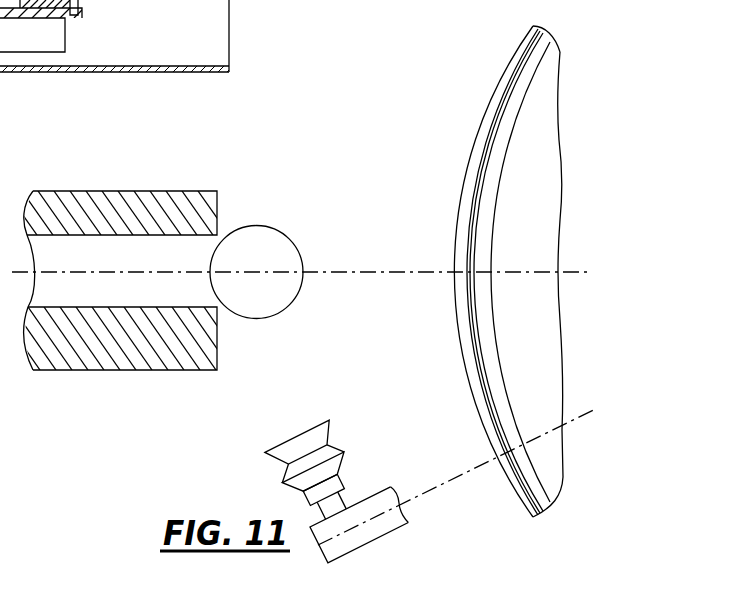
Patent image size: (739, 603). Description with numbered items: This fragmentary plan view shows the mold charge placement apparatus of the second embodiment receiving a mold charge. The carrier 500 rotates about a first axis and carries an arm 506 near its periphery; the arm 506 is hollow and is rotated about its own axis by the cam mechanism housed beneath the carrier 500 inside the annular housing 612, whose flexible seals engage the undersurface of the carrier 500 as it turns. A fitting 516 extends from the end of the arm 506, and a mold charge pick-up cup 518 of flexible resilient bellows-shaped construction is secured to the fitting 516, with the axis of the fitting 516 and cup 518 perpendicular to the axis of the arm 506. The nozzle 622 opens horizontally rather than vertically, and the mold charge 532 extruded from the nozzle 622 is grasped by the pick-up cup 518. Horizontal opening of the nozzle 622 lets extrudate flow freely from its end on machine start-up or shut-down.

The carrier 500 is at (452, 354).
The arm 506 is at (381, 535).
The fitting 516 is at (342, 498).
The mold charge pick-up cup 518 is at (337, 448).
The mold charge 532 is at (255, 228).
The annular housing 612 is at (219, 72).
The nozzle 622 is at (66, 363).